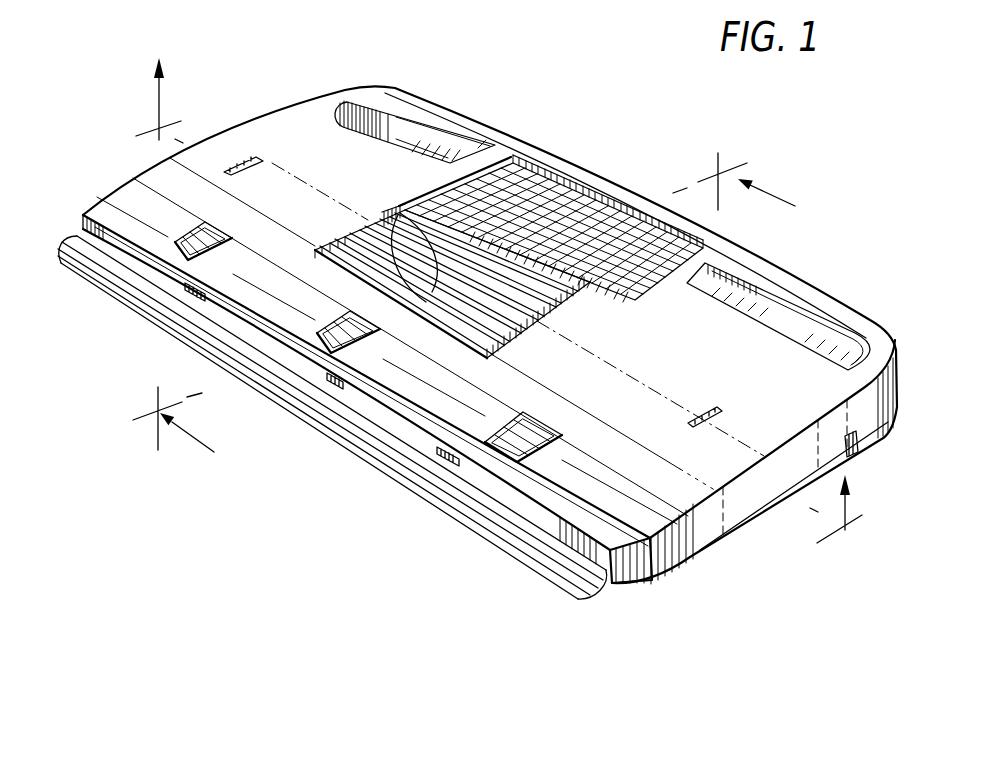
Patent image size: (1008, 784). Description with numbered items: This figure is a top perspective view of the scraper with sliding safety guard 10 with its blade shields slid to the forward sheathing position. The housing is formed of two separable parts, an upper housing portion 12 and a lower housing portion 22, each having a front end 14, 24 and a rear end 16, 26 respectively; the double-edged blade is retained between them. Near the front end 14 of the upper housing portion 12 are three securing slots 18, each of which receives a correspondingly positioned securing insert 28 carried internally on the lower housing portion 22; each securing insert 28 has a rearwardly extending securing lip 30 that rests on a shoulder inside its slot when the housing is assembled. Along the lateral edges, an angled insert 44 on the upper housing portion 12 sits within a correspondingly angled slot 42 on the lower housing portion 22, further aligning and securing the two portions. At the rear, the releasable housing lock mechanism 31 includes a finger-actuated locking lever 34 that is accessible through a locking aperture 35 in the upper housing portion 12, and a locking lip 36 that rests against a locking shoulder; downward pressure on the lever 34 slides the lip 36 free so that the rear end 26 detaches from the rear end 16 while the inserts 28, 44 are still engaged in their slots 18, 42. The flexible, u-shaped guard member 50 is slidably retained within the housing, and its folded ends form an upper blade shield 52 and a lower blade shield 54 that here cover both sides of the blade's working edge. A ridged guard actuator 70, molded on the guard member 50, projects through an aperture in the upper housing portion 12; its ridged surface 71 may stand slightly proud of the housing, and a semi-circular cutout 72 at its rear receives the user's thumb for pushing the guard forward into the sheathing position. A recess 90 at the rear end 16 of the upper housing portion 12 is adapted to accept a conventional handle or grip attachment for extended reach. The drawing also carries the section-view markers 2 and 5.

The section line 2- 2 is at (472, 319).
The section line 5- 5 is at (502, 287).
The scraper with sliding safety guard 10 is at (351, 82).
The upper housing portion 12 is at (267, 140).
The front end 14 is at (400, 395).
The rear end 16 is at (455, 115).
The securing slots 18 is at (158, 317).
The lower housing portion 22 is at (747, 520).
The front end 24 is at (632, 577).
The rear end 26 is at (837, 465).
The securing insert 28 is at (185, 257).
The securing lip 30 is at (228, 232).
The releasable housing lock mechanism 31 is at (577, 170).
The locking lever 34 is at (530, 183).
The locking aperture 35 is at (645, 212).
The locking lip 36 is at (590, 232).
The angled slot 42 is at (707, 553).
The angled insert 44 is at (675, 565).
The guard member 50 is at (67, 226).
The upper blade shield 52 is at (500, 523).
The lower blade shield 54 is at (577, 600).
The guard actuator 70 is at (317, 250).
The ridged surface 71 is at (485, 360).
The semi-circular cutout 72 is at (400, 213).
The recess 90 is at (408, 123).